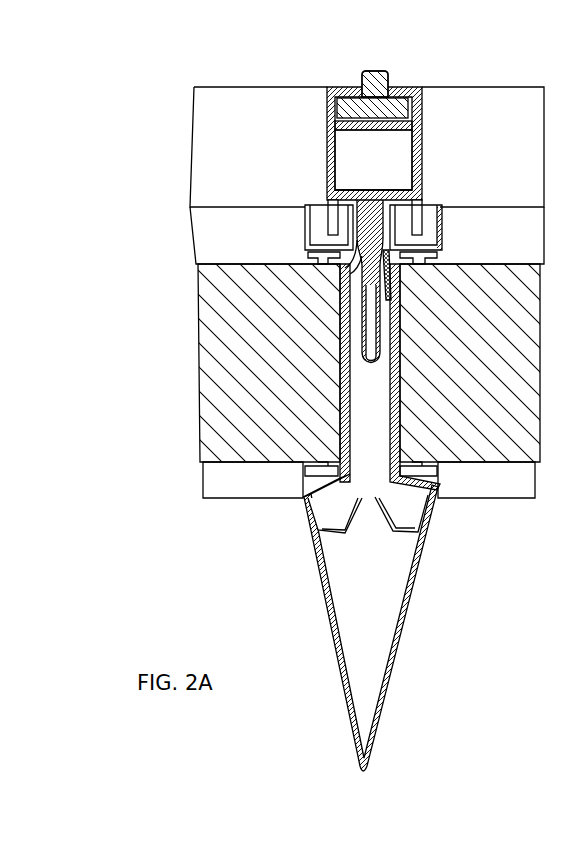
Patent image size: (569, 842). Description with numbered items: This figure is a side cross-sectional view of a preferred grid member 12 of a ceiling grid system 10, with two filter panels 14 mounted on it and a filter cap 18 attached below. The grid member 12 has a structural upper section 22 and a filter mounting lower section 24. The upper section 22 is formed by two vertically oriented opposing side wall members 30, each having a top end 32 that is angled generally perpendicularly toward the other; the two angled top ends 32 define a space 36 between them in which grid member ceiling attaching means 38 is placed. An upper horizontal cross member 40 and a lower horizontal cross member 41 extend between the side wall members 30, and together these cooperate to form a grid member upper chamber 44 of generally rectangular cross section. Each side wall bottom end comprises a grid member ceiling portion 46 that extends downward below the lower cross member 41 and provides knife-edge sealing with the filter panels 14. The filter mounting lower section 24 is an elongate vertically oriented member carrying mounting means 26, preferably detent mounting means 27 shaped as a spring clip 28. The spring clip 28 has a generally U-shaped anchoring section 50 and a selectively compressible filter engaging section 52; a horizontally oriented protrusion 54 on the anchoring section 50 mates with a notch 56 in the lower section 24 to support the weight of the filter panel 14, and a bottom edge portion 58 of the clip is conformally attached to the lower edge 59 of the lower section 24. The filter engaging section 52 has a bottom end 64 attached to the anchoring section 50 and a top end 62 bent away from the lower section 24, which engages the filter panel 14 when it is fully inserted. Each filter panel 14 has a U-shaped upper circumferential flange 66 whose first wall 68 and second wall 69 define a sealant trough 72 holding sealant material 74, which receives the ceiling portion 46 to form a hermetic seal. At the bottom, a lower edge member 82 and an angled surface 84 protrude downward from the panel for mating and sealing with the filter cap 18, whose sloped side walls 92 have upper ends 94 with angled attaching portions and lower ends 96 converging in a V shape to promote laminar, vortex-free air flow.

The ceiling grid system 10 is at (262, 64).
The grid member 12 is at (414, 87).
The filter panel 14 is at (246, 239).
The filter cap 18 is at (327, 618).
The structural upper section 22 is at (422, 146).
The filter mounting lower section 24 is at (368, 368).
The mounting means 26 is at (366, 346).
The detent mounting means 27 is at (348, 300).
The spring clip 28 is at (353, 330).
The side wall member 30 is at (327, 162).
The top end 32 is at (348, 88).
The space 36 is at (408, 112).
The grid member ceiling attaching means 38 is at (376, 80).
The upper horizontal cross member 40 is at (384, 131).
The lower horizontal cross member 41 is at (383, 190).
The grid member upper chamber 44 is at (405, 170).
The grid member ceiling portion 46 is at (322, 220).
The anchoring section 50 is at (381, 347).
The filter engaging section 52 is at (389, 271).
The protrusion 54 is at (388, 294).
The notch 56 is at (396, 312).
The bottom edge portion 58 is at (350, 380).
The lower edge 59 is at (366, 362).
The top end 62 is at (347, 259).
The bottom end 64 is at (352, 279).
The upper circumferential flange 66 is at (430, 238).
The first wall 68 is at (440, 219).
The second wall 69 is at (417, 208).
The sealant trough 72 is at (430, 252).
The sealant material 74 is at (306, 247).
The lower edge member 82 is at (418, 517).
The angled surface 84 is at (307, 498).
The side wall 92 is at (413, 603).
The upper end 94 is at (305, 484).
The lower end 96 is at (358, 769).